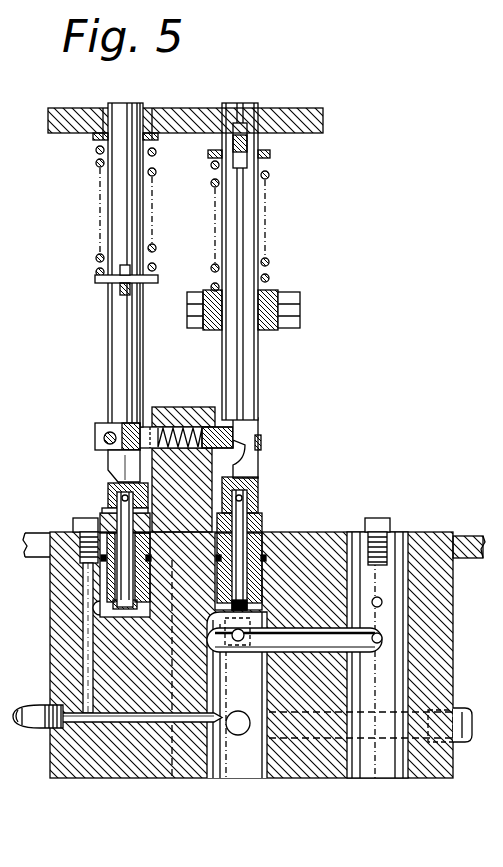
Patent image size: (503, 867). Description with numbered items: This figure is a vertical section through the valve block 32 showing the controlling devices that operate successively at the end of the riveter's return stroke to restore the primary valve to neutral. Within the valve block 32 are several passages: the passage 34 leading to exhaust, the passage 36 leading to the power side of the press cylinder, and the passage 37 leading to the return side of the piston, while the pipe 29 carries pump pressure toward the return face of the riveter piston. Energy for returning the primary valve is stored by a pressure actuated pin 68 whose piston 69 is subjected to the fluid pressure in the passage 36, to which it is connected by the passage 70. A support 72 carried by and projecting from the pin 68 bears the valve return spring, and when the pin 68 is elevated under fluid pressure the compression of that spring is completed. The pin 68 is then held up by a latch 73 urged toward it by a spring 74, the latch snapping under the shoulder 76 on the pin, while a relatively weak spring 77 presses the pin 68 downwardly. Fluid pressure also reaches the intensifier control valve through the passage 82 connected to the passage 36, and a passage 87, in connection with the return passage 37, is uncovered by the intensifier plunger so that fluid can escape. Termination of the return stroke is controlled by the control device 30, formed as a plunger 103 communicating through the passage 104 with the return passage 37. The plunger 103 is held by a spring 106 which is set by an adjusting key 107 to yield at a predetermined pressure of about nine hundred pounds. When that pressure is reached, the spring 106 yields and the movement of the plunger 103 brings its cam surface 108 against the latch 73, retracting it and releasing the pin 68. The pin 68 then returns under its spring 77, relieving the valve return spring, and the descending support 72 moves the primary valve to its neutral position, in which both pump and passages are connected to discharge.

The pipe 29 is at (465, 742).
The control device 30 is at (124, 101).
The valve block 32 is at (427, 540).
The exhaust passage 34 is at (196, 785).
The power passage 36 is at (300, 638).
The return passage 37 is at (240, 735).
The pressure actuated pin 68 is at (241, 101).
The piston 69 is at (263, 525).
The passage 70 is at (240, 641).
The support 72 is at (272, 292).
The latch 73 is at (103, 425).
The spring 74 is at (185, 430).
The shoulder 76 is at (246, 440).
The spring 77 is at (267, 175).
The passage 82 is at (382, 603).
The passage 87 is at (42, 704).
The plunger 103 is at (112, 525).
The passage 104 is at (93, 608).
The spring 106 is at (96, 160).
The adjusting key 107 is at (118, 288).
The cam surface 108 is at (112, 462).